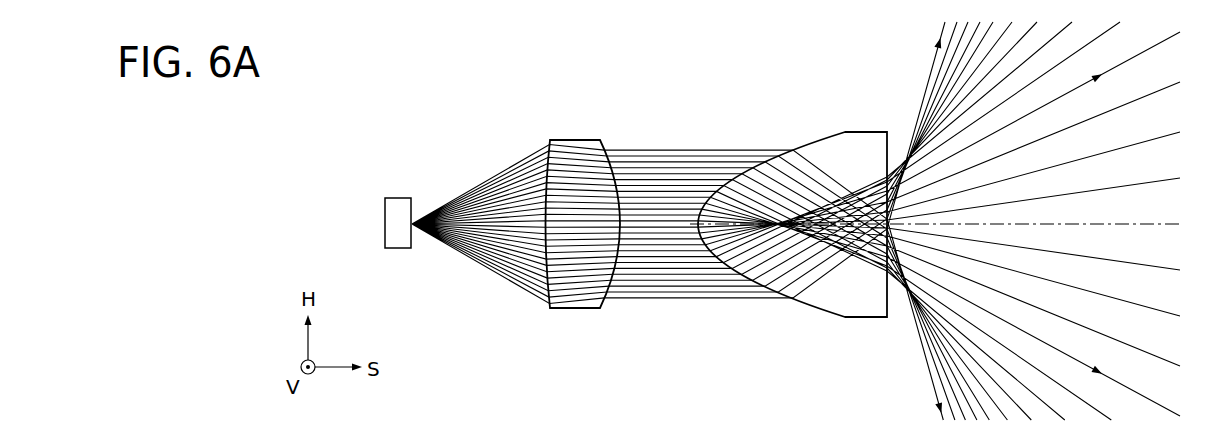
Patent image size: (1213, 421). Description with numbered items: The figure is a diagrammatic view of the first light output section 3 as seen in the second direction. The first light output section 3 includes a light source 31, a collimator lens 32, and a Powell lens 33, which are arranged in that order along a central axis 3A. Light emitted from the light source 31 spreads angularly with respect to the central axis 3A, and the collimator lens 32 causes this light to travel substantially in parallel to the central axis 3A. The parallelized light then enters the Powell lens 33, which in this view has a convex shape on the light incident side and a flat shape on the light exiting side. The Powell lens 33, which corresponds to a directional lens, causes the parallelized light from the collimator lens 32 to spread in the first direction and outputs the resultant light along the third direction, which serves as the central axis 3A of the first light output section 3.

The first light output section 3 is at (738, 78).
The light source 31 is at (395, 238).
The collimator lens 32 is at (550, 310).
The Powell lens 33 is at (865, 308).
The central axis 3A is at (1072, 215).